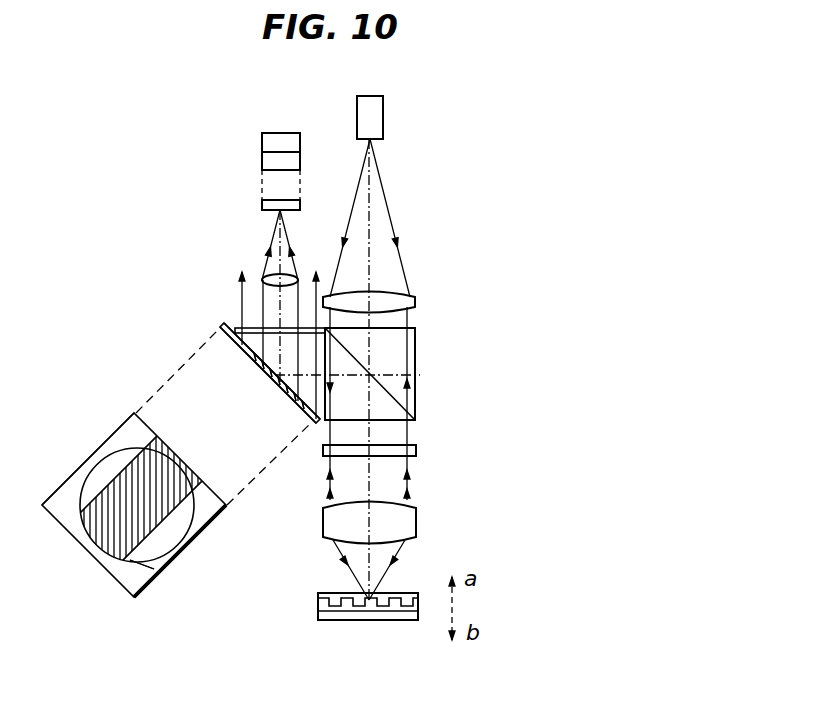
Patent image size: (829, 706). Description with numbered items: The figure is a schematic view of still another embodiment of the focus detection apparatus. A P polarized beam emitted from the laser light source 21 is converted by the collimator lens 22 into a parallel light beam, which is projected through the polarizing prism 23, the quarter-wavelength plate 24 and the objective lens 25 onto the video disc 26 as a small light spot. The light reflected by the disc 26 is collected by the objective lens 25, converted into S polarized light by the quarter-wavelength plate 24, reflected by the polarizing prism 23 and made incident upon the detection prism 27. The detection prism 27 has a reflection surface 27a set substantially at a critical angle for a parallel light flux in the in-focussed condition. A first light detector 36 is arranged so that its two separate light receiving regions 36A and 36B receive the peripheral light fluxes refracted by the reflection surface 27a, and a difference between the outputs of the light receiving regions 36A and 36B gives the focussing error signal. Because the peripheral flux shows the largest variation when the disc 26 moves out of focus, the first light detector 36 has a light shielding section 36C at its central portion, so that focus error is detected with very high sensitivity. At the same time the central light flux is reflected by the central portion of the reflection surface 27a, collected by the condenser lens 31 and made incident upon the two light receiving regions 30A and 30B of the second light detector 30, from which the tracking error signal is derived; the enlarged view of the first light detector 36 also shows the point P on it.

The laser light source 21 is at (378, 108).
The collimator lens 22 is at (415, 301).
The polarizing prism 23 is at (417, 375).
The quarter-wavelength plate 24 is at (416, 451).
The objective lens 25 is at (416, 523).
The video disc 26 is at (405, 593).
The detection prism 27 is at (257, 328).
The reflection surface 27a is at (274, 386).
The second light detector 30 is at (312, 105).
The light receiving region 30A is at (264, 137).
The light receiving region 30B is at (262, 157).
The condenser lens 31 is at (290, 278).
The first light detector 36 is at (216, 318).
The light receiving region 36A is at (313, 422).
The light receiving region 36B is at (233, 342).
The light shielding section 36C is at (262, 364).
The reference point P is at (153, 577).